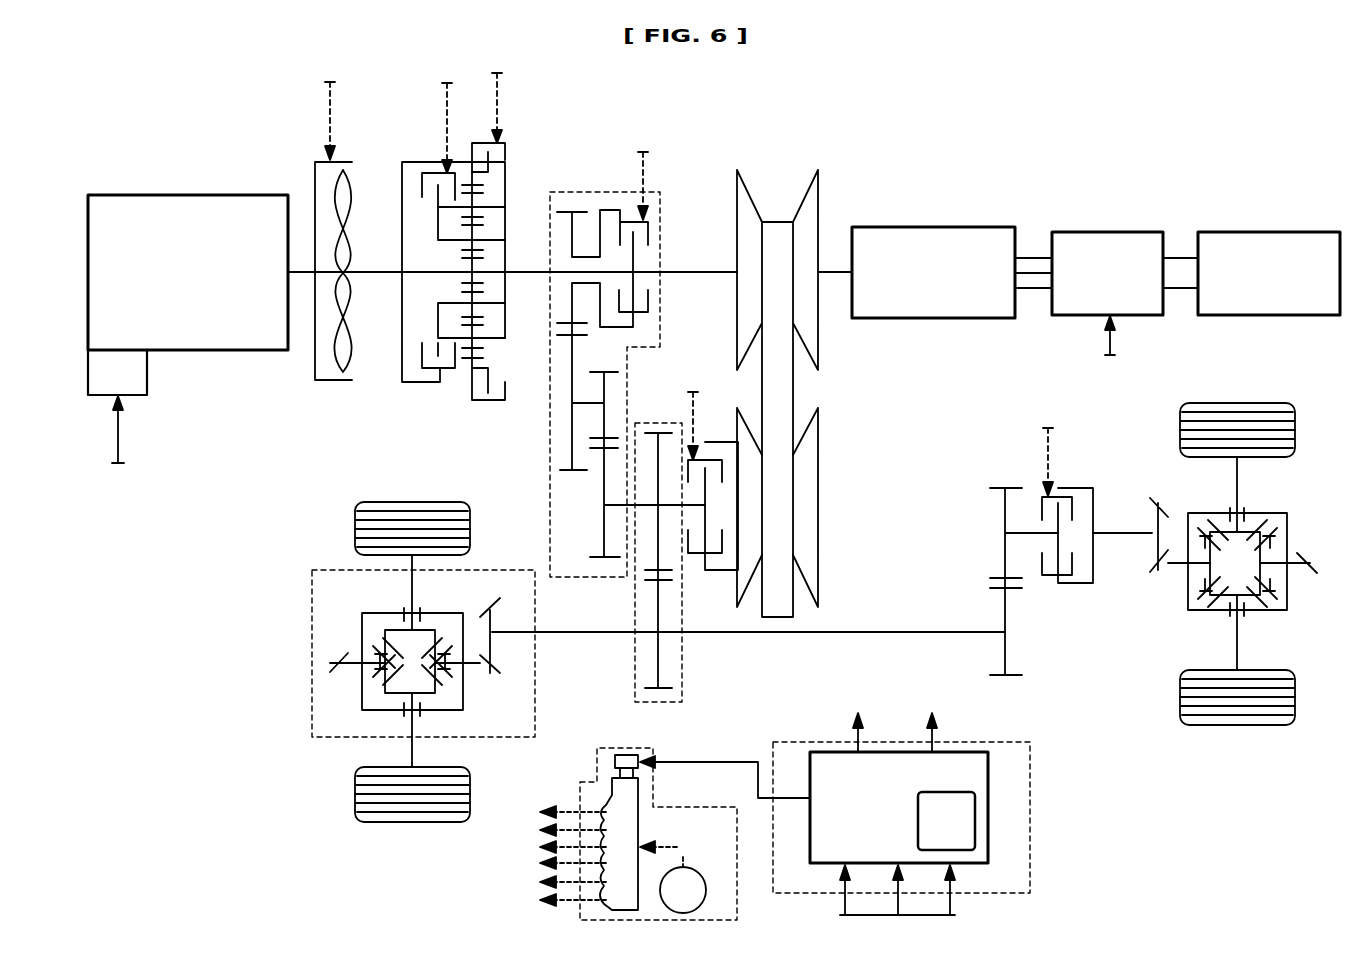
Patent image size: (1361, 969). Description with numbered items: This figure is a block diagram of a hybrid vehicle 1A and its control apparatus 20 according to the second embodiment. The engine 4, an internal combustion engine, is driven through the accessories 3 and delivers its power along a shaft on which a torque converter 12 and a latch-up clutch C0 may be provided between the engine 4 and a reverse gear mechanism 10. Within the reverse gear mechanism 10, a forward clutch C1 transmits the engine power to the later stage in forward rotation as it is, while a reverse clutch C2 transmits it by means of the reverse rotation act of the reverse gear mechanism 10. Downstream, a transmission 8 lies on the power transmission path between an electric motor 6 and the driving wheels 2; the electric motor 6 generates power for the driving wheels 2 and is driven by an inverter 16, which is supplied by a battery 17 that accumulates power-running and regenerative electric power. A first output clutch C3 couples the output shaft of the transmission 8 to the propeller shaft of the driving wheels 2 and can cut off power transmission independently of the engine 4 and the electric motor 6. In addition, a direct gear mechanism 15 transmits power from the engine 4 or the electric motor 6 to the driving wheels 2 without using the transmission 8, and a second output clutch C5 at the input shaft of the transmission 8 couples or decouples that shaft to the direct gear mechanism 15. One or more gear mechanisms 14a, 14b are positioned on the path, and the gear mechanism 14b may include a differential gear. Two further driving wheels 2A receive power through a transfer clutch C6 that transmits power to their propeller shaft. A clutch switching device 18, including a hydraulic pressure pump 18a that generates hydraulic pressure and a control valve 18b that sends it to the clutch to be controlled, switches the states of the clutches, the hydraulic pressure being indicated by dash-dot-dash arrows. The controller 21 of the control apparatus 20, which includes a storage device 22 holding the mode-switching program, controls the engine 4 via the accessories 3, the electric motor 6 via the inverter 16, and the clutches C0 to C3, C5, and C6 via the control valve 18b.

The hybrid vehicle 1A is at (1033, 124).
The driving wheels 2 is at (434, 501).
The driving wheels 2A is at (1261, 402).
The accessories 3 is at (148, 388).
The engine 4 is at (203, 193).
The electric motor 6 is at (944, 226).
The transmission 8 is at (819, 160).
The reverse gear mechanism 10 is at (497, 420).
The torque converter 12 is at (323, 400).
The gear mechanism 14a is at (682, 670).
The gear mechanism 14b is at (498, 570).
The direct gear mechanism 15 is at (572, 190).
The inverter 16 is at (1113, 230).
The battery 17 is at (1263, 230).
The clutch switching device 18 is at (608, 745).
The hydraulic pressure pump 18a is at (702, 869).
The control valve 18b is at (641, 805).
The control apparatus 20 is at (1018, 742).
The controller 21 is at (971, 752).
The storage device 22 is at (953, 792).
The latch-up clutch C0 is at (322, 160).
The forward clutch C1 is at (424, 170).
The reverse clutch C2 is at (486, 141).
The first output clutch C3 is at (713, 456).
The second output clutch C5 is at (628, 218).
The transfer clutch C6 is at (1060, 494).